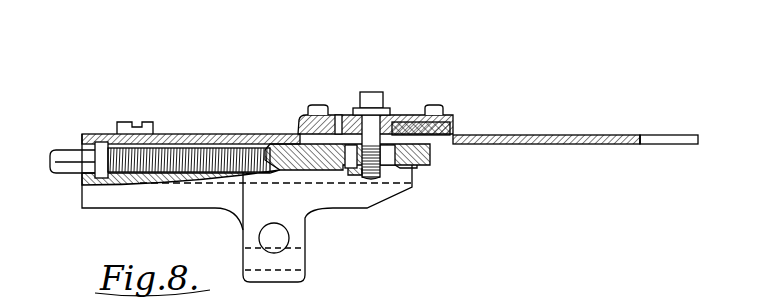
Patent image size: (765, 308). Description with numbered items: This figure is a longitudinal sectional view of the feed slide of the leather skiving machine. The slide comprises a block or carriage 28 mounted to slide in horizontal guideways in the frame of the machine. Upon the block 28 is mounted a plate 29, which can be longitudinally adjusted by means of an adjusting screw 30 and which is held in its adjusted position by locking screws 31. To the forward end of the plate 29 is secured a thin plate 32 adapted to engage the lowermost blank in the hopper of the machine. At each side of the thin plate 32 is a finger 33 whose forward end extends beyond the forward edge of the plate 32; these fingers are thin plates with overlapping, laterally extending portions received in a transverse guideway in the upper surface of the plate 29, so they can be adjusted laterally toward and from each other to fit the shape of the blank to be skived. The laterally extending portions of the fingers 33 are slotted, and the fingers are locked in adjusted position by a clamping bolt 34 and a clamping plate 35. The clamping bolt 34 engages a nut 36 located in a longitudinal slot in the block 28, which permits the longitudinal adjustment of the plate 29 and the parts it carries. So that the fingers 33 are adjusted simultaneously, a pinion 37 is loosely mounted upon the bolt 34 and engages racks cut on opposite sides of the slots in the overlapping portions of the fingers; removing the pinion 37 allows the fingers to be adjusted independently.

The block or carriage 28 is at (322, 153).
The plate 29 is at (285, 137).
The adjusting screw 30 is at (65, 165).
The locking screws 31 is at (143, 127).
The thin plate 32 is at (551, 144).
The finger 33 is at (660, 137).
The clamping bolt 34 is at (373, 102).
The clamping plate 35 is at (396, 120).
The nut 36 is at (387, 172).
The pinion 37 is at (348, 120).